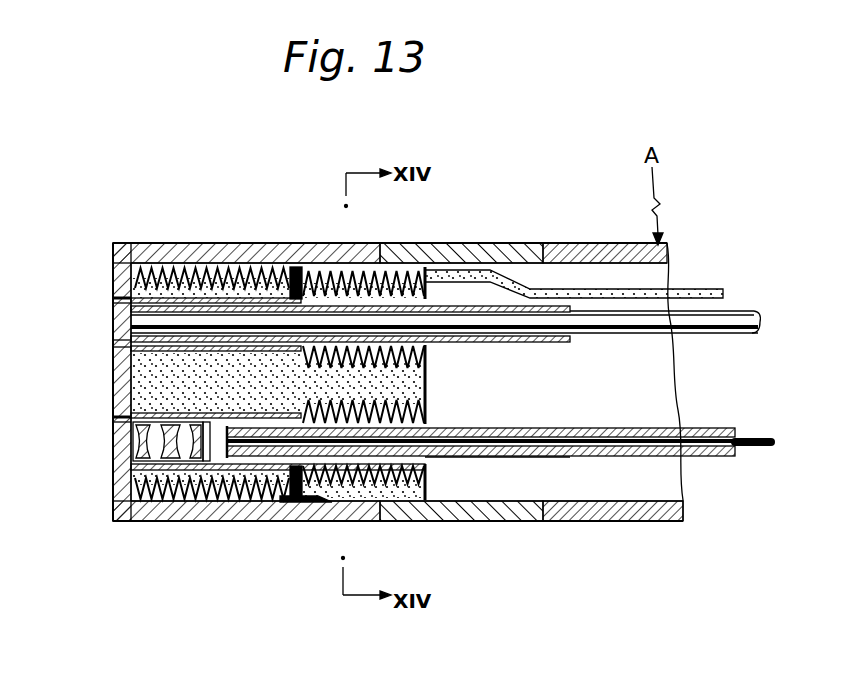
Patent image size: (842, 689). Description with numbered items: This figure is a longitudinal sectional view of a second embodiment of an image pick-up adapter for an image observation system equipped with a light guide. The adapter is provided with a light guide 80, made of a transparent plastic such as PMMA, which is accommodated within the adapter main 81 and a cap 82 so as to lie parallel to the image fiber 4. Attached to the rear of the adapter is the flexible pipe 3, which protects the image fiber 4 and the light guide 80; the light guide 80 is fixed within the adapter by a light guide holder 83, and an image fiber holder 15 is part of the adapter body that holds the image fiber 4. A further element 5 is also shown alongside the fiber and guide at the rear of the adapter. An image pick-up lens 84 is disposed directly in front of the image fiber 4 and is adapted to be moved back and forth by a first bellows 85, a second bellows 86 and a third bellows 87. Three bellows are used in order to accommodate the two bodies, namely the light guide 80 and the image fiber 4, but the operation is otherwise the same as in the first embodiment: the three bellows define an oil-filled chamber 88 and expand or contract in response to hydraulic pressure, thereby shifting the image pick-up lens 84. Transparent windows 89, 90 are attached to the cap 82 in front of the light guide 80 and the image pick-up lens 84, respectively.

The flexible pipe 3 is at (585, 245).
The image fiber 4 is at (738, 453).
The cable sheath 5 is at (723, 293).
The image fiber holder 15 is at (443, 456).
The light guide 80 is at (213, 320).
The adapter main 81 is at (459, 245).
The cap 82 is at (300, 513).
The light guide holder 83 is at (500, 337).
The image pick-up lens 84 is at (177, 462).
The first bellows 85 is at (171, 268).
The second bellows 86 is at (305, 275).
The third bellows 87 is at (300, 478).
The oil-filled chamber 88 is at (212, 380).
The transparent window 89 is at (113, 302).
The transparent window 90 is at (113, 448).